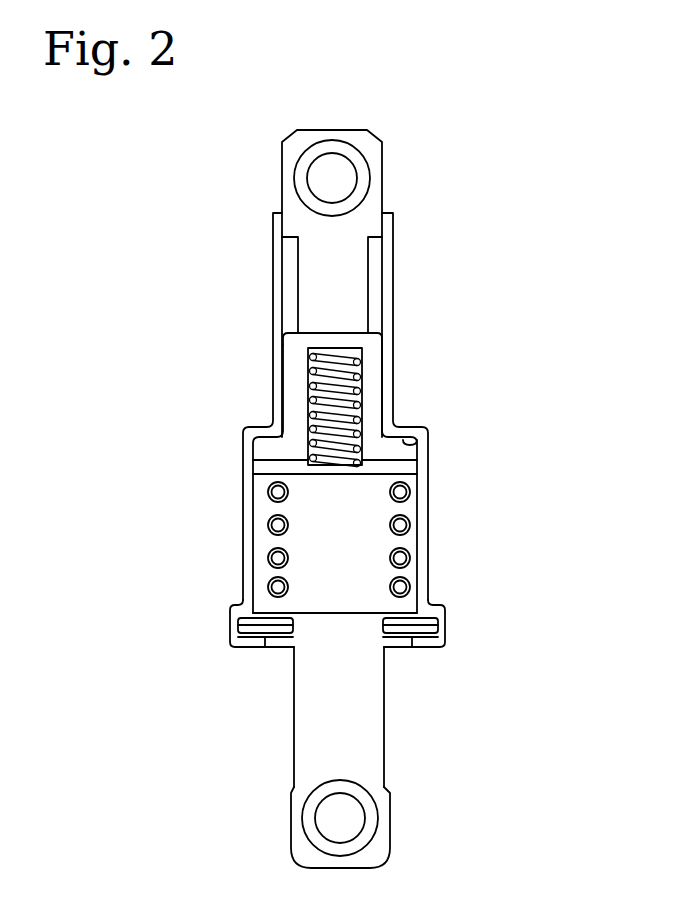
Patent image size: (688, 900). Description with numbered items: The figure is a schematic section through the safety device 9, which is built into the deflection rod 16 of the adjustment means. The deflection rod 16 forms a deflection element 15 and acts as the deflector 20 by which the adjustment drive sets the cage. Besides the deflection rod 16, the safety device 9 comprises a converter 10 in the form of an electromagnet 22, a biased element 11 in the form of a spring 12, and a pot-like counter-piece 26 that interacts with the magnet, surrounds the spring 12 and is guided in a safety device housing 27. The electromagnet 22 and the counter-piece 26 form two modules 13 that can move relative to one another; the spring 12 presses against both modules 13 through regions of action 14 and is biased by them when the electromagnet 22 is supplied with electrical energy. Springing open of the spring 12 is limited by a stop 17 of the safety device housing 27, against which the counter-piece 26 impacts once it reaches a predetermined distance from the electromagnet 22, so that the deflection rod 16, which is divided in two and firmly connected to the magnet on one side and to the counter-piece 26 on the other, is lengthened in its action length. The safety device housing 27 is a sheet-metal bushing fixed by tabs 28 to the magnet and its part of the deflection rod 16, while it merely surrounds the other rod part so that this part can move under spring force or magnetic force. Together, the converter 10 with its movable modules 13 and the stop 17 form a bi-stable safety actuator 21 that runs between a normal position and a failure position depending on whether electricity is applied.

The safety device 9 is at (197, 212).
The deflector 20 is at (460, 203).
The safety device housing 27 is at (273, 266).
The counter-piece 26 is at (295, 363).
The biased element 11 is at (310, 388).
The spring 12 is at (357, 405).
The regions of action 14 is at (311, 352).
The converter 10 is at (263, 508).
The modules 13 is at (262, 448).
The stop 17 is at (403, 440).
The electromagnet 22 is at (403, 585).
The tabs 28 is at (427, 640).
The safety actuator 21 is at (170, 625).
The deflection rod 16 is at (362, 683).
The deflection element 15 is at (305, 727).